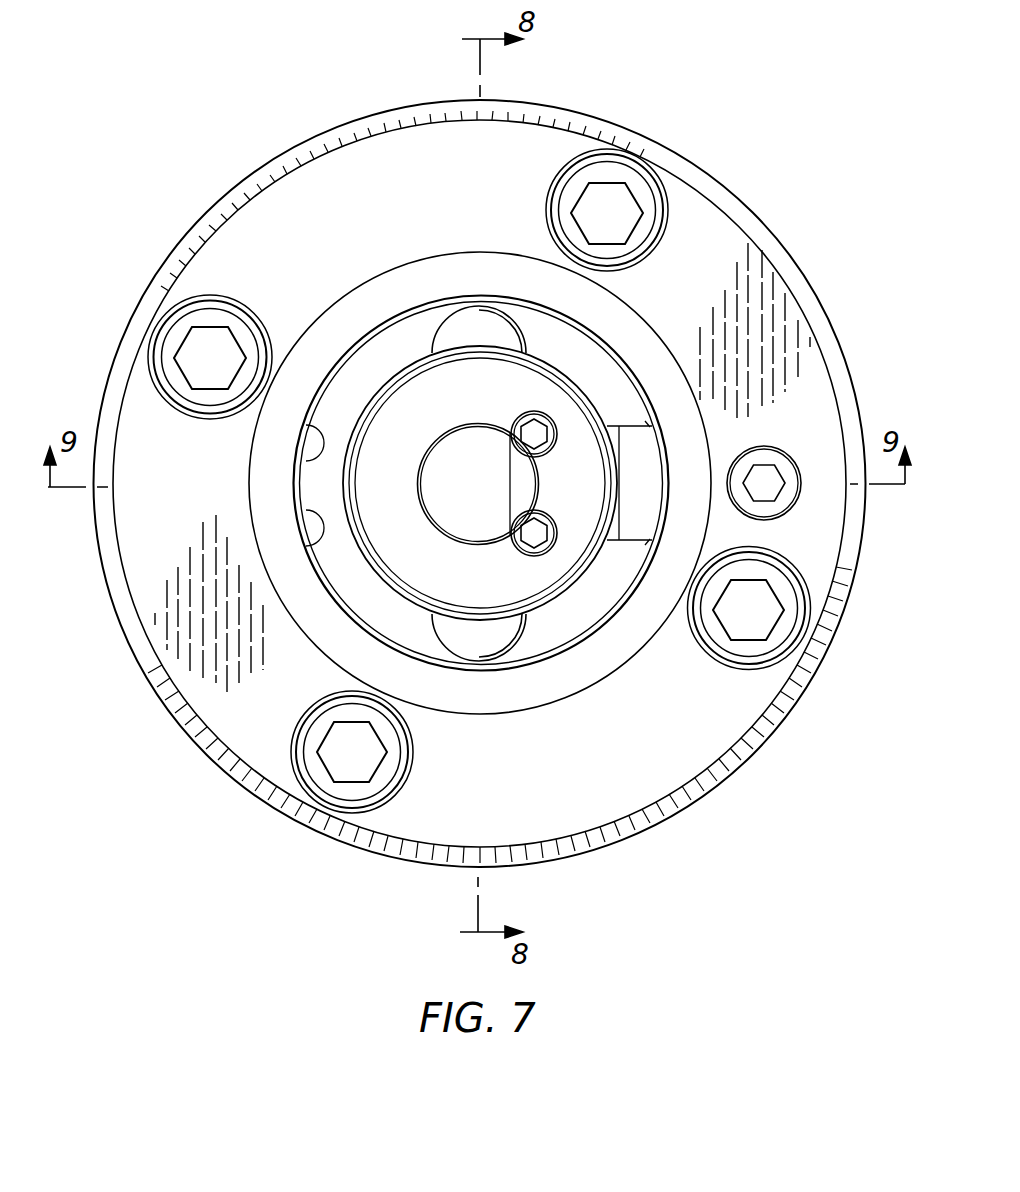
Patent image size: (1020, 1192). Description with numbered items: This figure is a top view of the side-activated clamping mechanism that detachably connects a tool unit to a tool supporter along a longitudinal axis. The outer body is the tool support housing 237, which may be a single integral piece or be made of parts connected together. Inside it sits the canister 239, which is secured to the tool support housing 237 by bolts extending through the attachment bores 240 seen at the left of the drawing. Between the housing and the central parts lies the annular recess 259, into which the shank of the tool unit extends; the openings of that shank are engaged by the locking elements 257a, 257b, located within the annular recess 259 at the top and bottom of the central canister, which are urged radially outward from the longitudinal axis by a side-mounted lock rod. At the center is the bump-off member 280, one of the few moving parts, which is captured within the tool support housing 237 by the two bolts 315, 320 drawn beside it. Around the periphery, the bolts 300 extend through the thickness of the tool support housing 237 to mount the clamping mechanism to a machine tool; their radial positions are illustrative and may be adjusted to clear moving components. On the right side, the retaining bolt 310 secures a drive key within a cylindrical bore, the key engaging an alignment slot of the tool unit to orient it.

The tool support housing 237 is at (820, 674).
The canister 239 is at (418, 405).
The attachment bores 240 is at (313, 526).
The locking element 257a is at (478, 326).
The locking element 257b is at (478, 657).
The annular recess 259 is at (590, 372).
The bump-off member 280 is at (438, 467).
The bolts 300 is at (213, 347).
The retaining bolt 310 is at (766, 490).
The bolt 315 is at (527, 548).
The bolt 320 is at (527, 424).